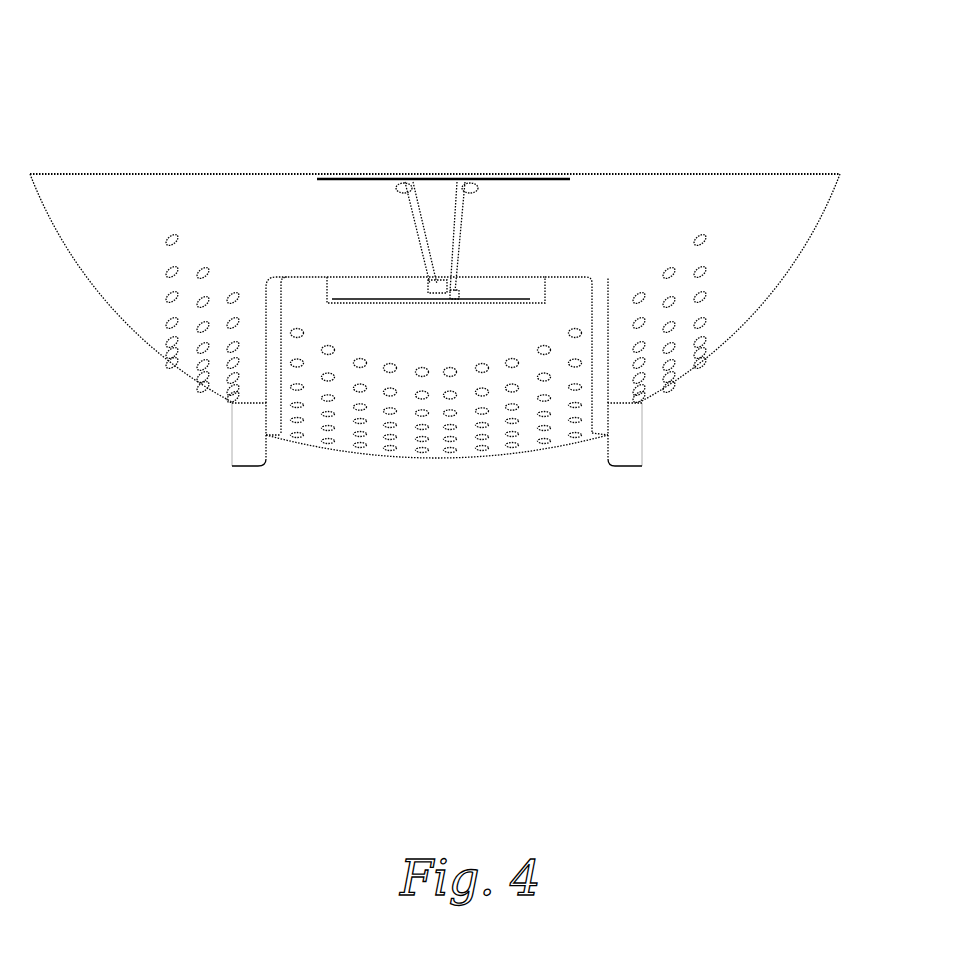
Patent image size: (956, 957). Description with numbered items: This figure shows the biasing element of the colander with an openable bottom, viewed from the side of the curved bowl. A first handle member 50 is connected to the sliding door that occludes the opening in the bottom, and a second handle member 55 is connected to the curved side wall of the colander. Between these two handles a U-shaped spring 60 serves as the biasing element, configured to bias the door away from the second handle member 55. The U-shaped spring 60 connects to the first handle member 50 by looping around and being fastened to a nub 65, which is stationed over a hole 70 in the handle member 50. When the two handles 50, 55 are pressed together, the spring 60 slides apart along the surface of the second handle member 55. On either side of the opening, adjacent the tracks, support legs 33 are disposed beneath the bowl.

The support legs 33 is at (630, 453).
The handle member 50 is at (528, 302).
The second handle member 55 is at (357, 179).
The U-shaped spring 60 is at (458, 232).
The nub 65 is at (432, 283).
The hole 70 is at (453, 293).